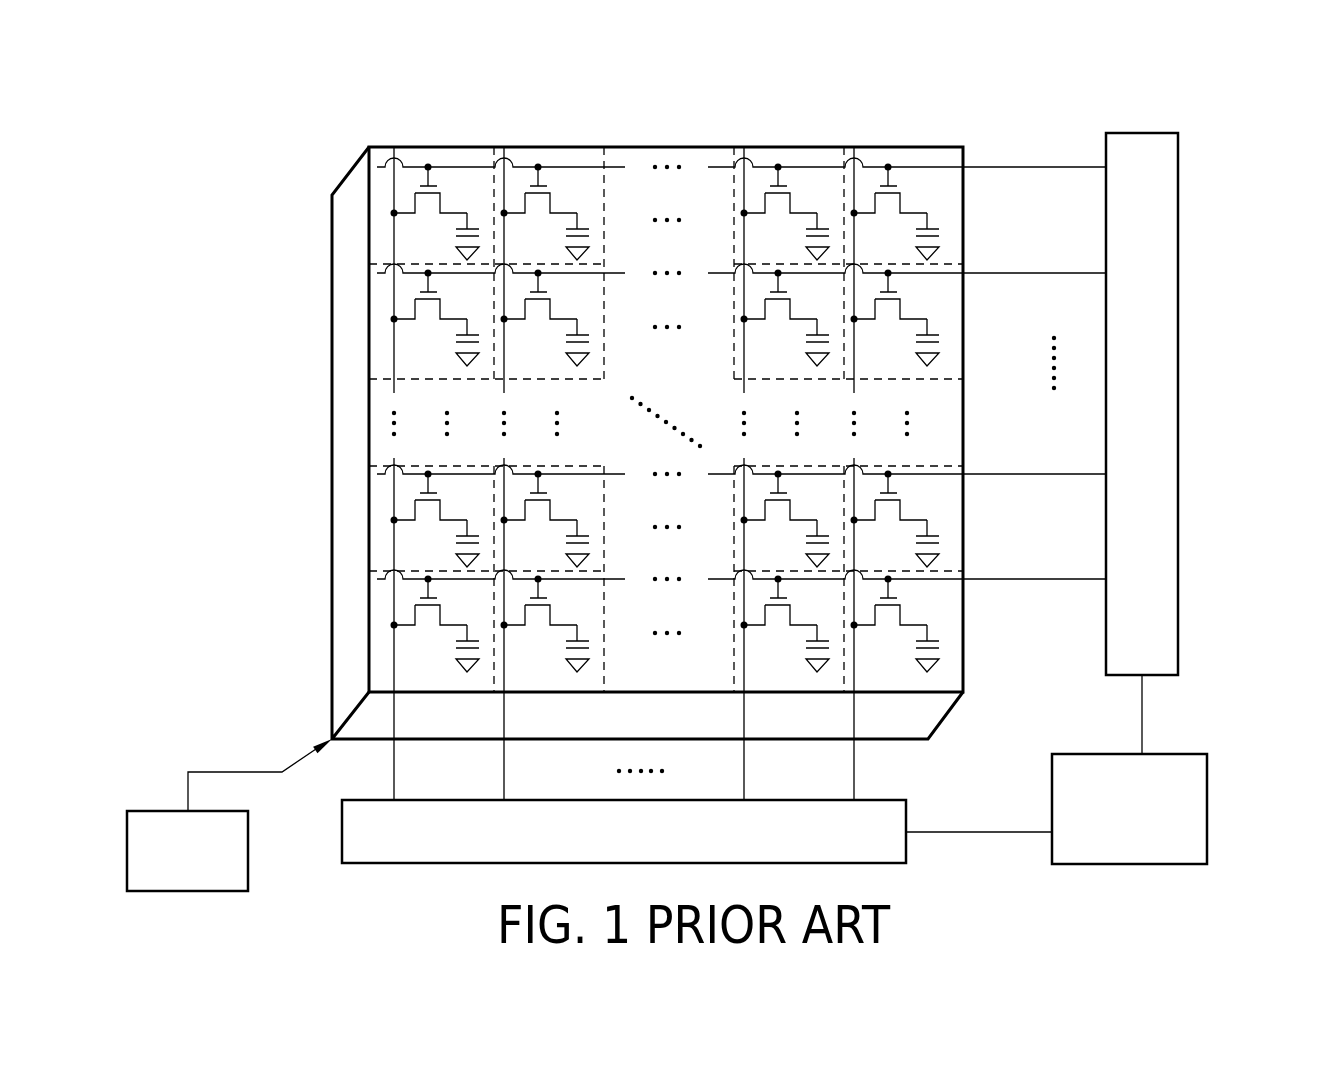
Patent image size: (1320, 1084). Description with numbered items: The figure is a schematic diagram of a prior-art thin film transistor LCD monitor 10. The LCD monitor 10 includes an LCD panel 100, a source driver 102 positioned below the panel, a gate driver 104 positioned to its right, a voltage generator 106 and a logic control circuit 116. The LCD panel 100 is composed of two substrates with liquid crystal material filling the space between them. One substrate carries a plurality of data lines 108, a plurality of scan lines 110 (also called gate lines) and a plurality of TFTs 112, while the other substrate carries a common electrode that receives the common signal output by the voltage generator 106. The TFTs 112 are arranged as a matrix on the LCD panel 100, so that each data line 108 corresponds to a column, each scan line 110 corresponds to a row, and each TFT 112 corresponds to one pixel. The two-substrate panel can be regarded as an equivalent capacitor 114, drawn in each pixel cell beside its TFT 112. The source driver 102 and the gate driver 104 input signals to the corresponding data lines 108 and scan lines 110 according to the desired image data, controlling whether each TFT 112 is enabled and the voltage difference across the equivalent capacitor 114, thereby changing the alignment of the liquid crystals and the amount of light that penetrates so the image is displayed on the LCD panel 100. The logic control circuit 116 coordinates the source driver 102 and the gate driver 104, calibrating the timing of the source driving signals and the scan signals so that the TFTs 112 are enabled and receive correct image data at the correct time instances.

The LCD monitor 10 is at (1200, 100).
The LCD panel 100 is at (348, 173).
The source driver 102 is at (906, 808).
The gate driver 104 is at (1178, 381).
The voltage generator 106 is at (150, 811).
The data line 108 is at (396, 757).
The scan line 110 is at (1017, 167).
The TFT 112 is at (670, 396).
The equivalent capacitor 114 is at (670, 444).
The logic control circuit 116 is at (1207, 806).